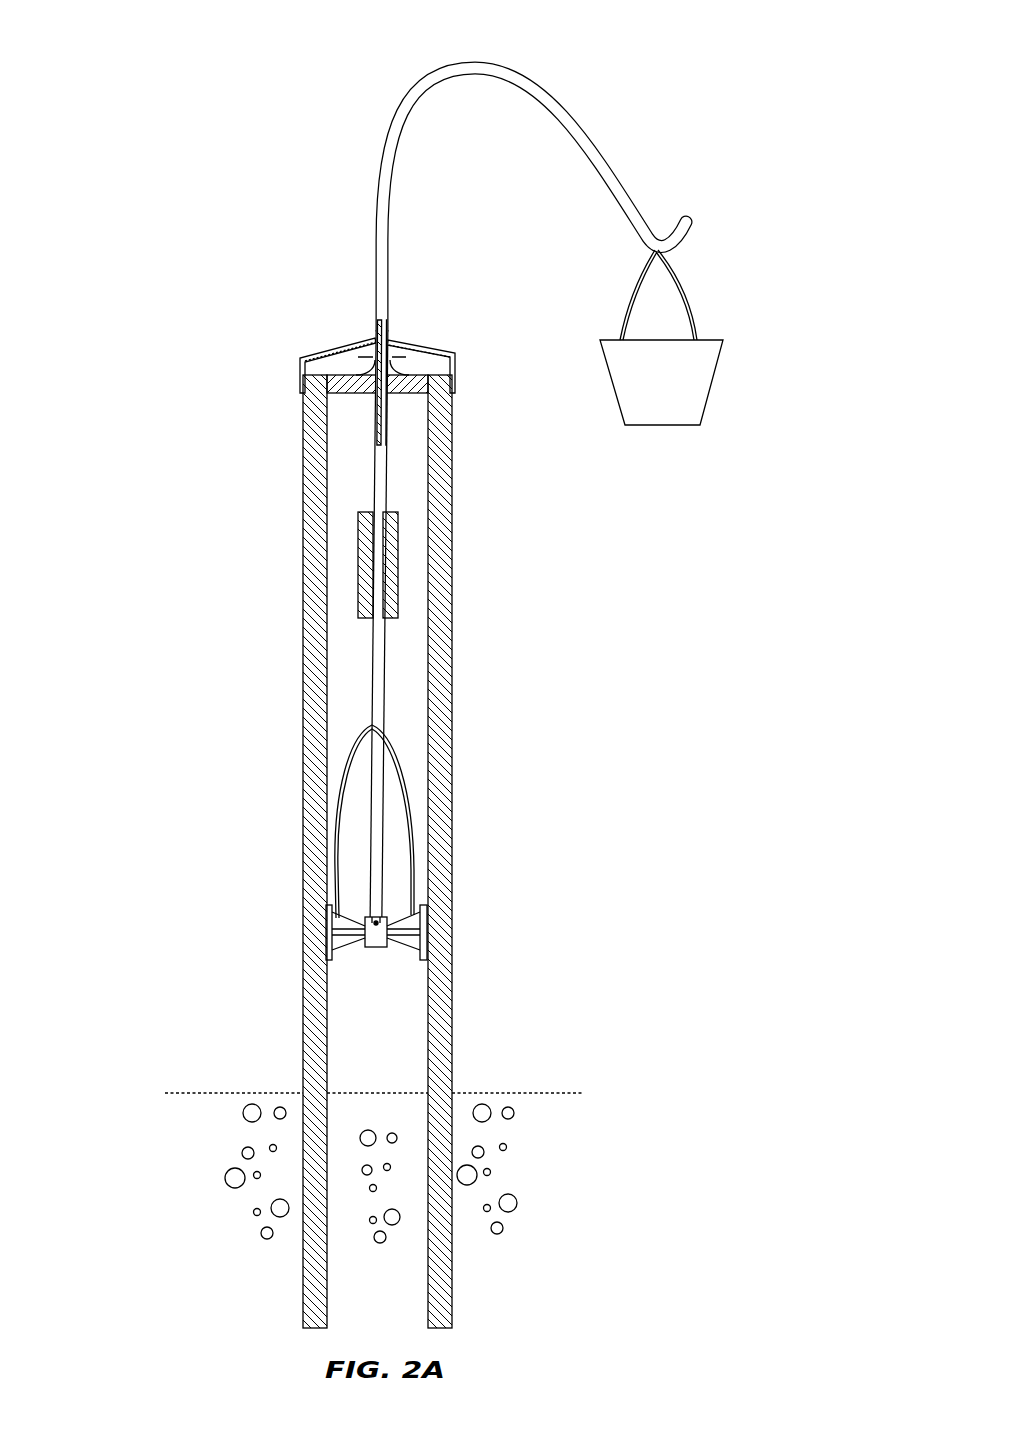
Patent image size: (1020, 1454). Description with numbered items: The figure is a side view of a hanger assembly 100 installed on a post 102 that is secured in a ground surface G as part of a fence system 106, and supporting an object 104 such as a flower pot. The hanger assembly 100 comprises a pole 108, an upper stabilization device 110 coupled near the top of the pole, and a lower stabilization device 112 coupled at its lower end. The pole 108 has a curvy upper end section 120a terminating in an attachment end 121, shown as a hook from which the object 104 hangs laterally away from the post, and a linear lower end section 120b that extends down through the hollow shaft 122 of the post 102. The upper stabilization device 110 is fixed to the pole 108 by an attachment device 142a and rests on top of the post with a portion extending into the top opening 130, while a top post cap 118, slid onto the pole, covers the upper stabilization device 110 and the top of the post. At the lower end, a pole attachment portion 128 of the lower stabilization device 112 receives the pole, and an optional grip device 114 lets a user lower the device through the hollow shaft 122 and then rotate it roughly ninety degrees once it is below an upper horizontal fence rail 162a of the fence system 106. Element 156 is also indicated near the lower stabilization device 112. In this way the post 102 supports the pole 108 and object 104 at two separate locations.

The hanger assembly 100 is at (499, 515).
The post 102 is at (312, 590).
The object 104 is at (703, 298).
The fence system 106 is at (437, 666).
The pole 108 is at (390, 246).
The upper stabilization device 110 is at (330, 392).
The lower stabilization device 112 is at (365, 960).
The grip device 114 is at (347, 783).
The top post cap 118 is at (348, 345).
The upper end section 120a is at (372, 183).
The lower end section 120b is at (340, 635).
The attachment end 121 is at (686, 220).
The hollow shaft 122 is at (345, 550).
The pole attachment portion 128 is at (375, 923).
The top opening 130 is at (340, 432).
The attachment device 142a is at (395, 357).
The base block 156 is at (372, 948).
The horizontal fence rail 162a is at (388, 550).
The ground surface G is at (225, 1093).